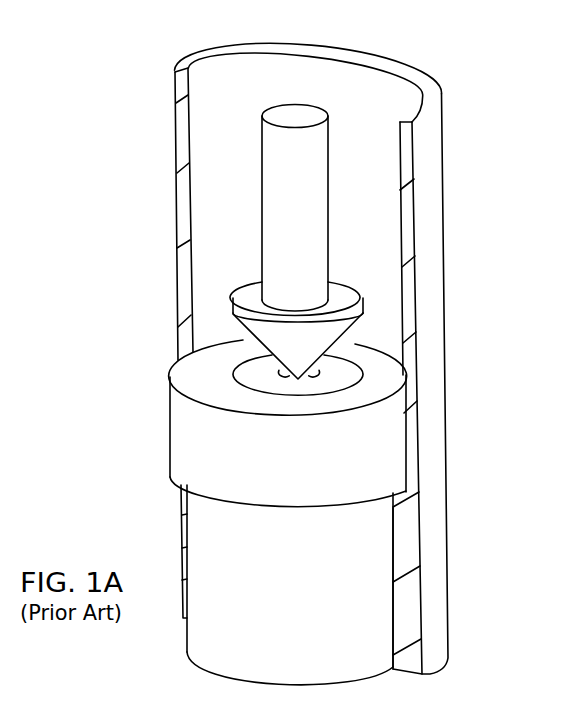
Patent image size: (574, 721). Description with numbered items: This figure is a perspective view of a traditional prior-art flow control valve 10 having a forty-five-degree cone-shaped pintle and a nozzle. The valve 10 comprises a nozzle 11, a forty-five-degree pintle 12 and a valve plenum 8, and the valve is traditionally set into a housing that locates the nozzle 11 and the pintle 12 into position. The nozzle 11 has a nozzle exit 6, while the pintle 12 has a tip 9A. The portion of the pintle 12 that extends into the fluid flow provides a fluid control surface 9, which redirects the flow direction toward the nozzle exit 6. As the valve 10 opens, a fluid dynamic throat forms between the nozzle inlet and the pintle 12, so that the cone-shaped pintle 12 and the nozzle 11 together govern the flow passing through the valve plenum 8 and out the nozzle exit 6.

The nozzle exit 6 is at (386, 671).
The valve plenum 8 is at (208, 212).
The fluid control surface 9 is at (338, 342).
The tip 9A is at (298, 379).
The valve 10 is at (492, 103).
The nozzle 11 is at (237, 460).
The pintle 12 is at (318, 335).